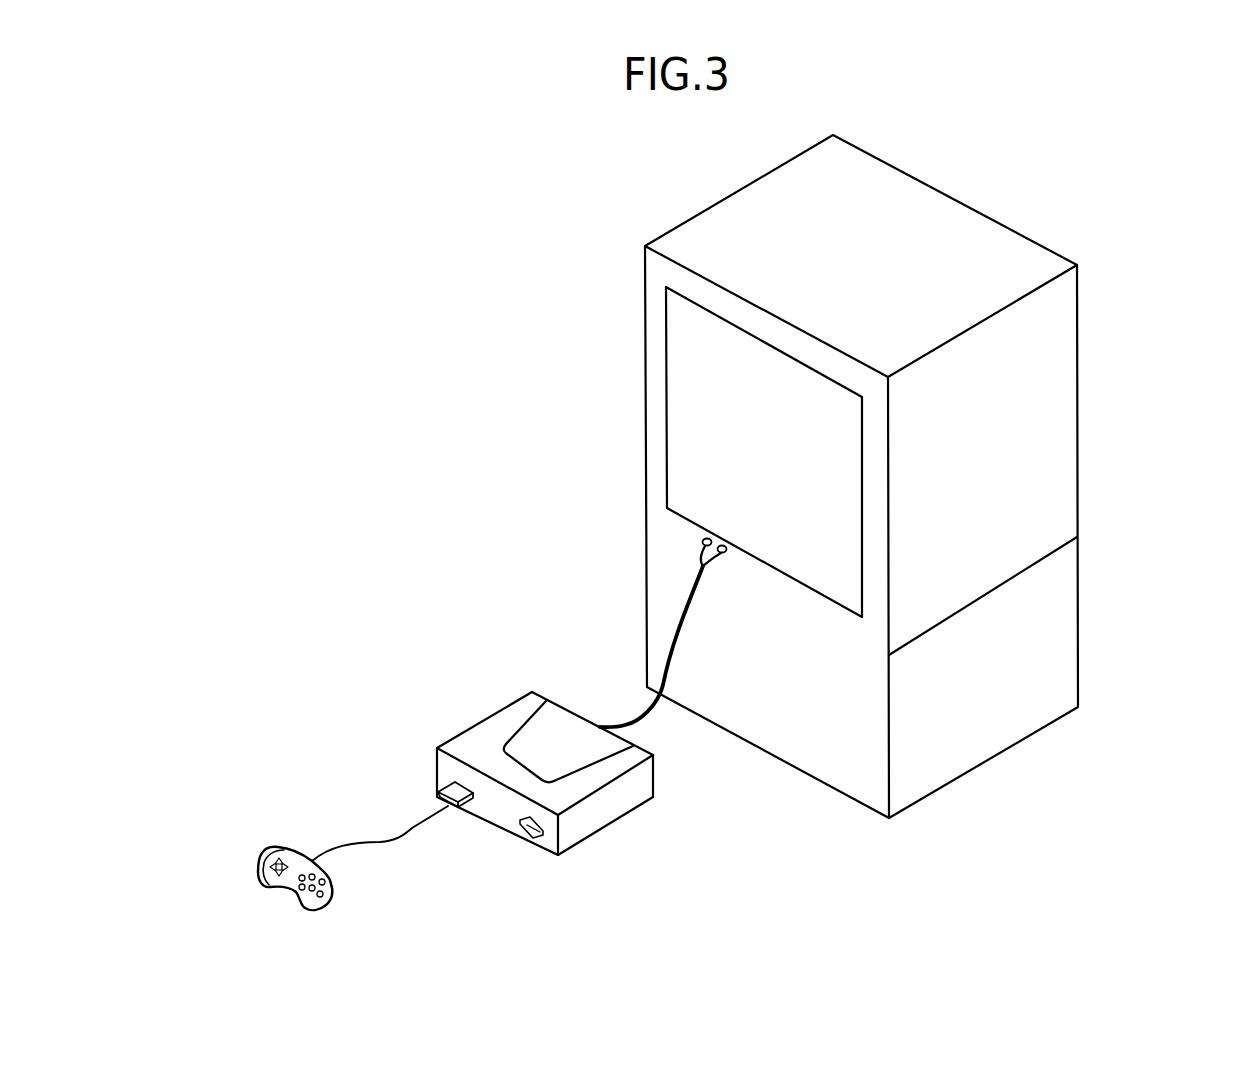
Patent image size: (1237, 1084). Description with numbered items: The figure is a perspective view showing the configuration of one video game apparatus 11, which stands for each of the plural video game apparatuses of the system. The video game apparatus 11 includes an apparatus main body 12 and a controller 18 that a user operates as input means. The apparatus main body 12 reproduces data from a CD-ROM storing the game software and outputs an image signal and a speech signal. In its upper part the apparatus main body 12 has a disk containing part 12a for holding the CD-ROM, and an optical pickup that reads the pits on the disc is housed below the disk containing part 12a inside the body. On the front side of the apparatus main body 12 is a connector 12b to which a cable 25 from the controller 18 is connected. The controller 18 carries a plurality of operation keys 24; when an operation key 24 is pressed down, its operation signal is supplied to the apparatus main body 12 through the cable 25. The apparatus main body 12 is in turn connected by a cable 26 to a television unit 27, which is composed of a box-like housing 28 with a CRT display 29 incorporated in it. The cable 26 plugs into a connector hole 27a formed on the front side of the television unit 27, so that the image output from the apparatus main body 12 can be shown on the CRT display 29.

The video game apparatus 11 is at (514, 194).
The apparatus main body 12 is at (625, 802).
The disk containing part 12a is at (569, 730).
The connector 12b is at (532, 832).
The controller 18 is at (333, 893).
The operation keys 24 is at (287, 853).
The cable 25 is at (398, 840).
The cable 26 is at (645, 715).
The television unit 27 is at (644, 425).
The connector hole 27a is at (700, 538).
The box-like housing 28 is at (1060, 407).
The CRT display 29 is at (690, 357).